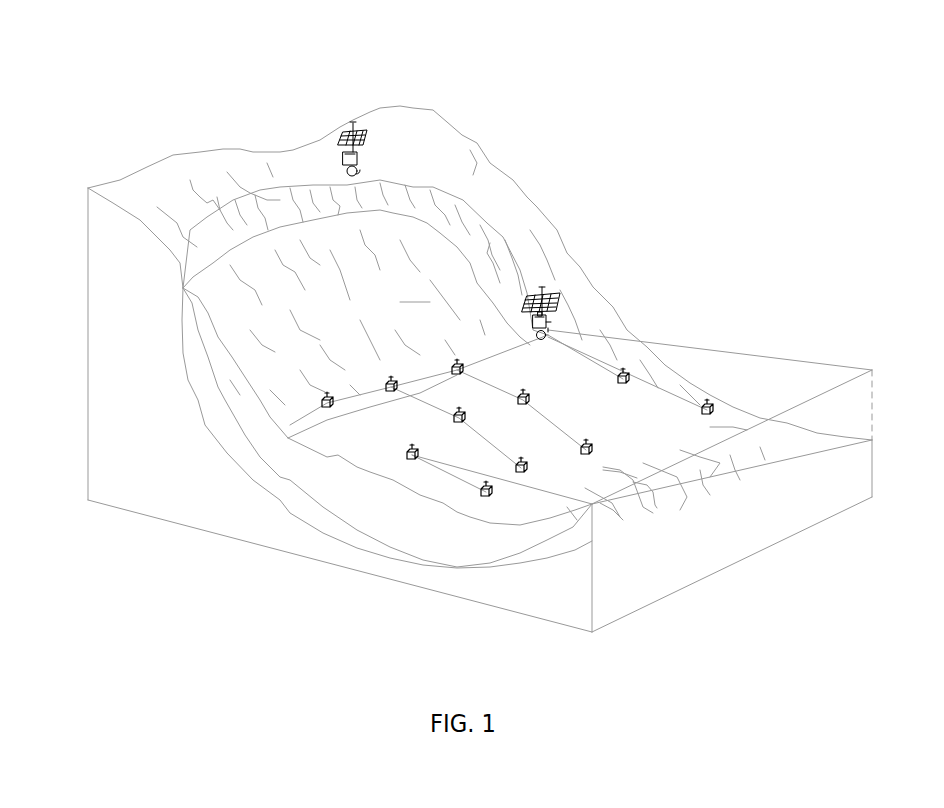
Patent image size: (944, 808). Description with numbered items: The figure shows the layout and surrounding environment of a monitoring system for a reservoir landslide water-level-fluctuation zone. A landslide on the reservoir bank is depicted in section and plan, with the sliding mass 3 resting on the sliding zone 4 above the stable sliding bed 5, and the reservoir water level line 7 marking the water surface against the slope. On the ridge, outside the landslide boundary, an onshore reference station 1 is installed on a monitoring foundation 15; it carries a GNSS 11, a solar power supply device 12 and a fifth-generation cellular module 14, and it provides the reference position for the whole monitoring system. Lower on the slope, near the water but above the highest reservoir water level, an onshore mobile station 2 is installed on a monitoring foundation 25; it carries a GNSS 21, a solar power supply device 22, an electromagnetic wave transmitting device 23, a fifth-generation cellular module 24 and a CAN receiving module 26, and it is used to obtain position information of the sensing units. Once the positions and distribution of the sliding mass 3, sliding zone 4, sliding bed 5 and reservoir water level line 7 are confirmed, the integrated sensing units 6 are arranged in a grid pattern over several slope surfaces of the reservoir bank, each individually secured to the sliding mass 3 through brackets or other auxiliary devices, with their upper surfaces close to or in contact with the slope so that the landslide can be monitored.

The onshore reference station 1 is at (614, 93).
The onshore mobile station 2 is at (706, 275).
The sliding mass 3 is at (215, 357).
The sliding zone 4 is at (217, 405).
The sliding bed 5 is at (130, 412).
The integrated sensing unit 6 is at (408, 455).
The reservoir water level line 7 is at (447, 472).
The GNSS 11 is at (370, 131).
The solar power supply device 12 is at (364, 146).
The 5G module 14 is at (359, 158).
The monitoring foundation 15 is at (360, 172).
The GNSS 21 is at (550, 296).
The solar power supply device 22 is at (548, 303).
The electromagnetic wave transmitting device 23 is at (549, 311).
The 5G module 24 is at (548, 319).
The monitoring foundation 25 is at (546, 337).
The CAN receiving module 26 is at (551, 326).